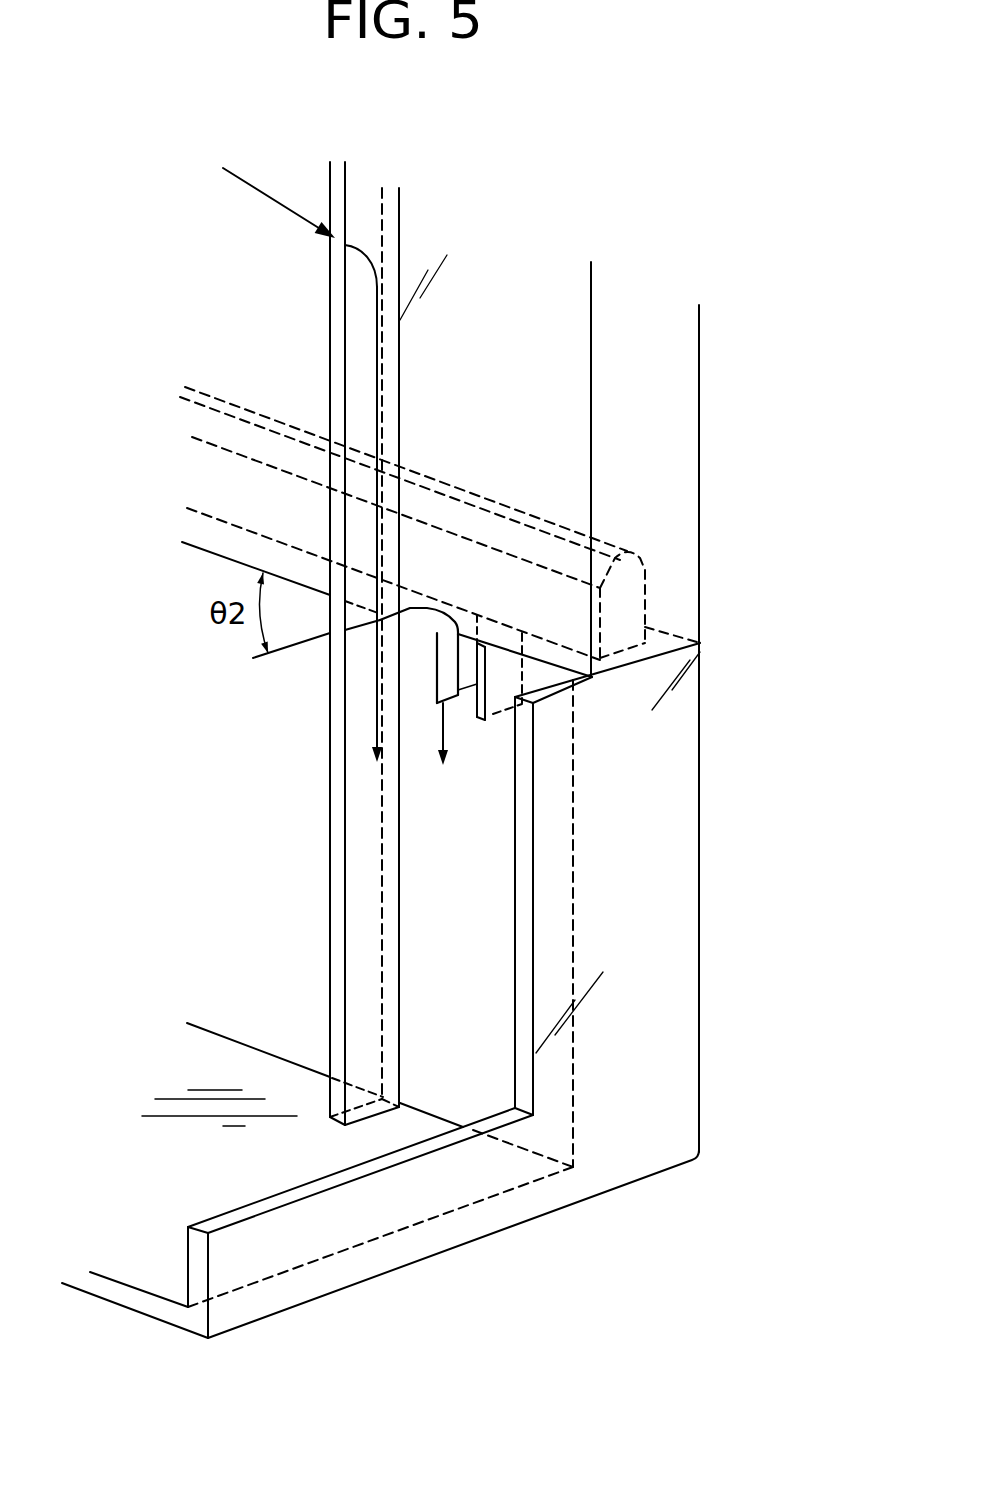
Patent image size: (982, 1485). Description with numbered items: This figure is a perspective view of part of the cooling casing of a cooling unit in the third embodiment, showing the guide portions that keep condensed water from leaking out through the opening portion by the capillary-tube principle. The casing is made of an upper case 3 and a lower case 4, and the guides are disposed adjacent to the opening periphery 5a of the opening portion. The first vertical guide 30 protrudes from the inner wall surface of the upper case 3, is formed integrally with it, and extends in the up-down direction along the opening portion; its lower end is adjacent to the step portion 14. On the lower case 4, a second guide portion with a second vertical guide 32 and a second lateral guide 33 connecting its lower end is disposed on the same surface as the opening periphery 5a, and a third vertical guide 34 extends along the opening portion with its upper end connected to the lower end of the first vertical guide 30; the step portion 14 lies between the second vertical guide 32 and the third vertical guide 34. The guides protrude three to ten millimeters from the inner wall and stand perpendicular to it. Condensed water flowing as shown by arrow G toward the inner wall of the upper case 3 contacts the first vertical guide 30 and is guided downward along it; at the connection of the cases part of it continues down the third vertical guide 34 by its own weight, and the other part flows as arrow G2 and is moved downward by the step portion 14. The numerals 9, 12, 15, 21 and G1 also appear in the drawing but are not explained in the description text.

The upper case 3 is at (708, 382).
The lower case 4 is at (710, 1009).
The opening periphery 5a is at (685, 480).
The door panel belt line 9 is at (237, 488).
The weatherstrip 12 is at (633, 565).
The step portion 14 is at (474, 704).
The bent portion 15 is at (478, 718).
The engaging tab 21 is at (447, 673).
The first vertical guide 30 is at (358, 334).
The second vertical guide 32 is at (523, 797).
The second lateral guide 33 is at (410, 1150).
The third vertical guide 34 is at (343, 813).
The flow of condensed water G is at (268, 193).
The glass movement direction G1 is at (377, 713).
The flow of condensed water G2 is at (420, 618).